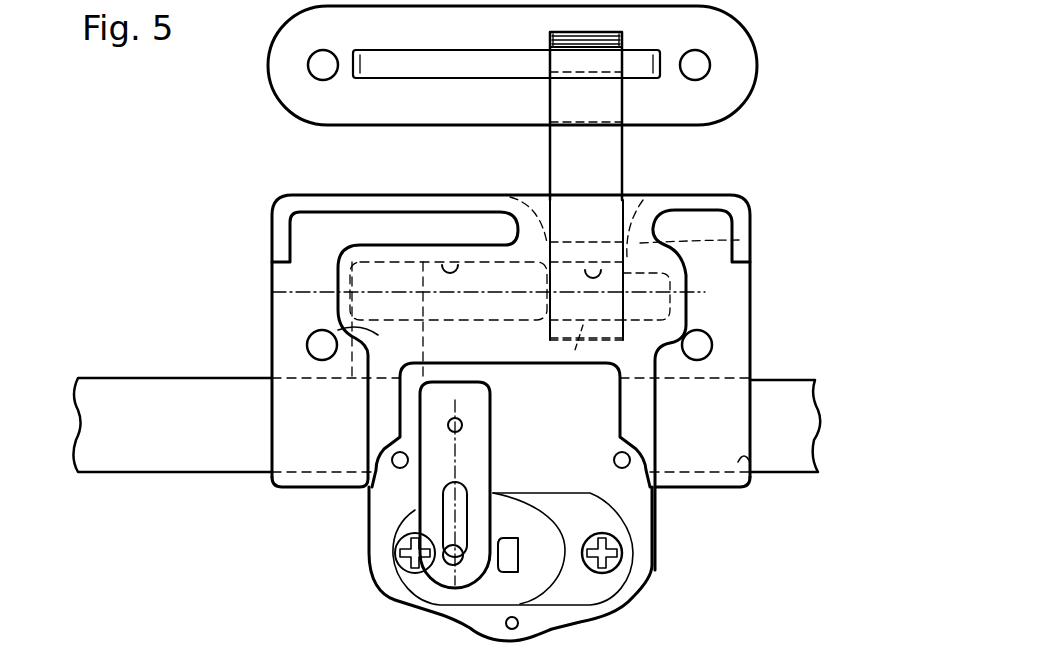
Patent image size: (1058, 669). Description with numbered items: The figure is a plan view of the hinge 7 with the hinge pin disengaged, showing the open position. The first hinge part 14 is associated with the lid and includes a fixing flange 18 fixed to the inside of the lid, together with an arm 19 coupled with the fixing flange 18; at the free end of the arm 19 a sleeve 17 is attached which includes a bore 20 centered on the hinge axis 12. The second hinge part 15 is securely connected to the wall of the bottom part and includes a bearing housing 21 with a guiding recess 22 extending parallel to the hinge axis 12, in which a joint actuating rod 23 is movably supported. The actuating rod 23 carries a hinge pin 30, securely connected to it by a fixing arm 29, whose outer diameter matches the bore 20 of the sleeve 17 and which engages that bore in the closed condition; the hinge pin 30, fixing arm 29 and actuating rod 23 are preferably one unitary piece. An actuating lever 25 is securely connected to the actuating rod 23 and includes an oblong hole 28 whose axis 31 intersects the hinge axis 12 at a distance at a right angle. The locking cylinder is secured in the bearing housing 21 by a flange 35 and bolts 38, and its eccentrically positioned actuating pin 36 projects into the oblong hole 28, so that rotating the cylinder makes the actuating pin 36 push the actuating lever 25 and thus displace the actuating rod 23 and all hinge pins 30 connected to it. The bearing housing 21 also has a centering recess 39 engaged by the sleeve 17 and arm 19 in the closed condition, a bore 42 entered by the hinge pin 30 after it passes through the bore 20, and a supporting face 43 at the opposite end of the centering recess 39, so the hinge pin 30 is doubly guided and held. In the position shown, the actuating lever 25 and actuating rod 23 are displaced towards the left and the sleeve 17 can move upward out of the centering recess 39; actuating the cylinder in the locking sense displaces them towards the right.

The hinge 7 is at (826, 186).
The hinge axis 12 is at (345, 290).
The first hinge part 14 is at (620, 165).
The second hinge part 15 is at (760, 316).
The sleeve 17 is at (583, 335).
The fixing flange 18 is at (740, 44).
The arm 19 is at (562, 136).
The bore 20 is at (647, 272).
The bearing housing 21 is at (733, 352).
The guiding recess 22 is at (743, 495).
The actuating rod 23 is at (800, 438).
The actuating lever 25 is at (468, 450).
The oblong hole 28 is at (447, 520).
The fixing arm 29 is at (340, 323).
The hinge pin 30 is at (498, 278).
The axis 31 is at (455, 472).
The flange 35 is at (600, 603).
The actuating pin 36 is at (450, 562).
The bolts 38 is at (410, 560).
The centering recess 39 is at (645, 200).
The bore 42 is at (740, 240).
The supporting face 43 is at (448, 265).